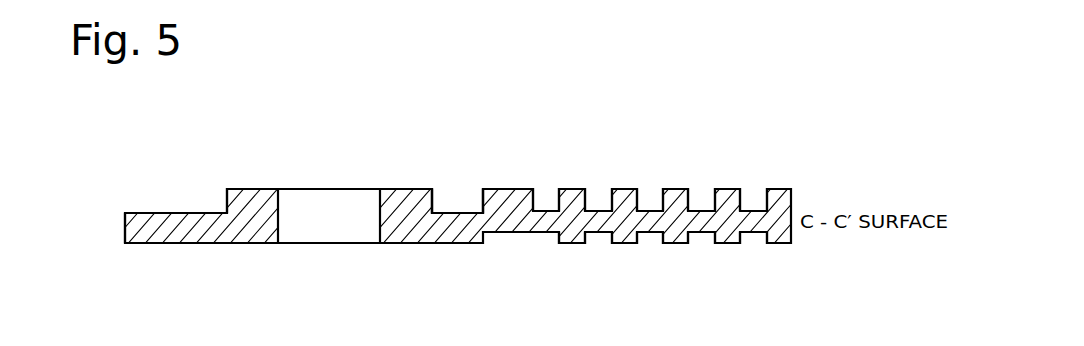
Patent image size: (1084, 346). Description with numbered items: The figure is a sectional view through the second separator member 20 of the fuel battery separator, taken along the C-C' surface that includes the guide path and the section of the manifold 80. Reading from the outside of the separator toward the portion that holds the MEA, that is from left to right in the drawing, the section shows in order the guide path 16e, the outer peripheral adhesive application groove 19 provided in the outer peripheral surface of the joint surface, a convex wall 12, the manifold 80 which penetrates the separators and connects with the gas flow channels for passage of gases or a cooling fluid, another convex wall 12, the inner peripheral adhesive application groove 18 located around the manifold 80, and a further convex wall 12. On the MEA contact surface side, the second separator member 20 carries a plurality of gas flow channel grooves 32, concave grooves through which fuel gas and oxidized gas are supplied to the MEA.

The convex wall 12 is at (248, 190).
The guide path 16e is at (158, 213).
The inner peripheral adhesive application groove 18 is at (455, 197).
The outer peripheral adhesive application groove 19 is at (182, 195).
The second separator member 20 is at (715, 155).
The gas flow channel groove 32 is at (598, 197).
The manifold 80 is at (328, 189).